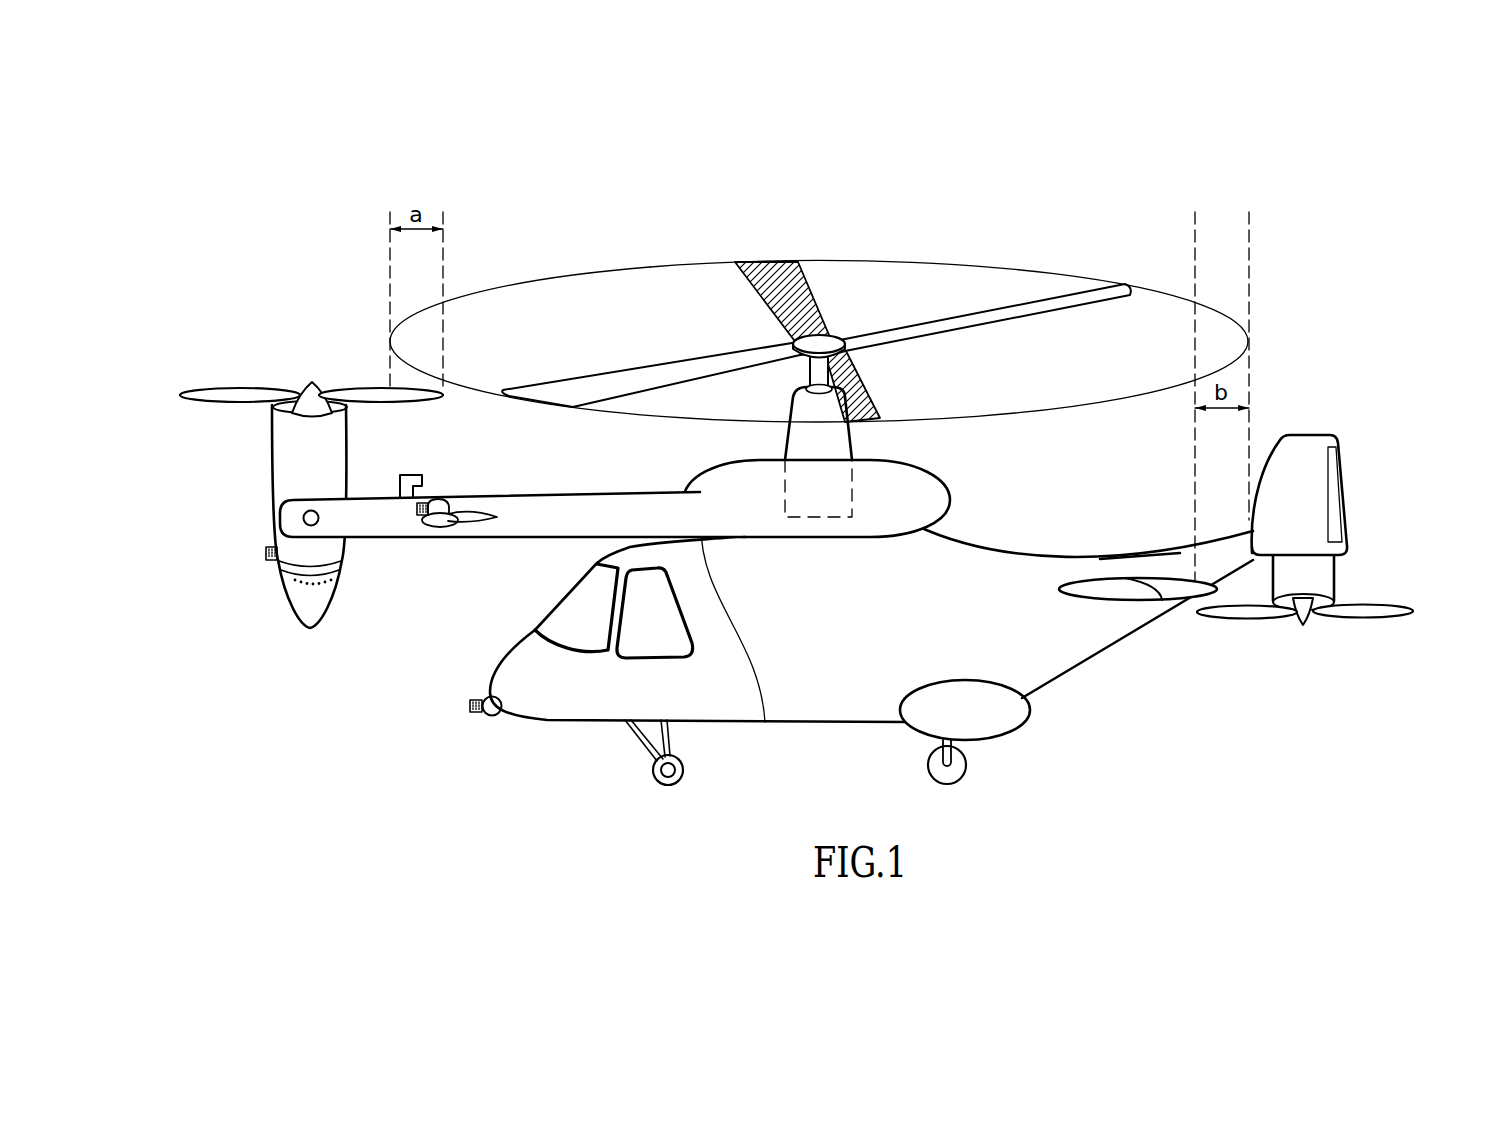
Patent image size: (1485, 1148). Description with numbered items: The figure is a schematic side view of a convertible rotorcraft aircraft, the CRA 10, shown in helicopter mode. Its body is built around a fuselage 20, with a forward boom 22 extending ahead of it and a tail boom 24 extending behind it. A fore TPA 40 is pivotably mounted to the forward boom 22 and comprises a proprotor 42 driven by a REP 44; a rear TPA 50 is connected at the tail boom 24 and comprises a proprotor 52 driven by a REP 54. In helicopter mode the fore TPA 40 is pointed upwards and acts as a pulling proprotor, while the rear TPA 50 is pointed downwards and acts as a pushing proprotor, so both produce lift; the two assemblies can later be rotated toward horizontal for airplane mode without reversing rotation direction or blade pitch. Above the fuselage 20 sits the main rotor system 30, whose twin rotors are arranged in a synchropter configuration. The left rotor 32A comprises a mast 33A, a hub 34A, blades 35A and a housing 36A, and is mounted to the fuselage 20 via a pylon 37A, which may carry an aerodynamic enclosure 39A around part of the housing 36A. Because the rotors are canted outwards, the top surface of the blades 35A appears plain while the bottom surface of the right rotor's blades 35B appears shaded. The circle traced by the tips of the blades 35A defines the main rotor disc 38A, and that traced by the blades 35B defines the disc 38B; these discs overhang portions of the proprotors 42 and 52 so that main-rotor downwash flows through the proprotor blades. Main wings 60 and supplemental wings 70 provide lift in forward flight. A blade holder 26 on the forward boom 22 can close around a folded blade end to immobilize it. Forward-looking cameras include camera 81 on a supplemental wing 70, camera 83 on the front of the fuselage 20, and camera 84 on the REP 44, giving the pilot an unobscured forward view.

The CRA 10 is at (270, 198).
The fuselage 20 is at (945, 518).
The forward boom 22 is at (527, 537).
The tail boom 24 is at (1163, 545).
The blade holder 26 is at (410, 473).
The main rotor system 30 is at (1220, 280).
The rotor 32A is at (766, 445).
The mast 33A is at (845, 361).
The hub 34A is at (827, 338).
The blades 35A is at (1020, 292).
The blades 35B is at (826, 326).
The housing 36A is at (790, 402).
The pylon 37A is at (882, 476).
The main rotor disc 38A is at (537, 275).
The main rotor disc 38B is at (693, 260).
The aerodynamic enclosure 39A is at (765, 724).
The fore TPA 40 is at (256, 578).
The proprotor 42 is at (248, 387).
The REP 44 is at (337, 597).
The rear TPA 50 is at (1346, 596).
The proprotor 52 is at (1373, 620).
The REP 54 is at (1273, 582).
The main wings 60 is at (1108, 598).
The supplemental wings 70 is at (437, 527).
The camera 81 is at (442, 500).
The camera 83 is at (490, 718).
The camera 84 is at (276, 548).